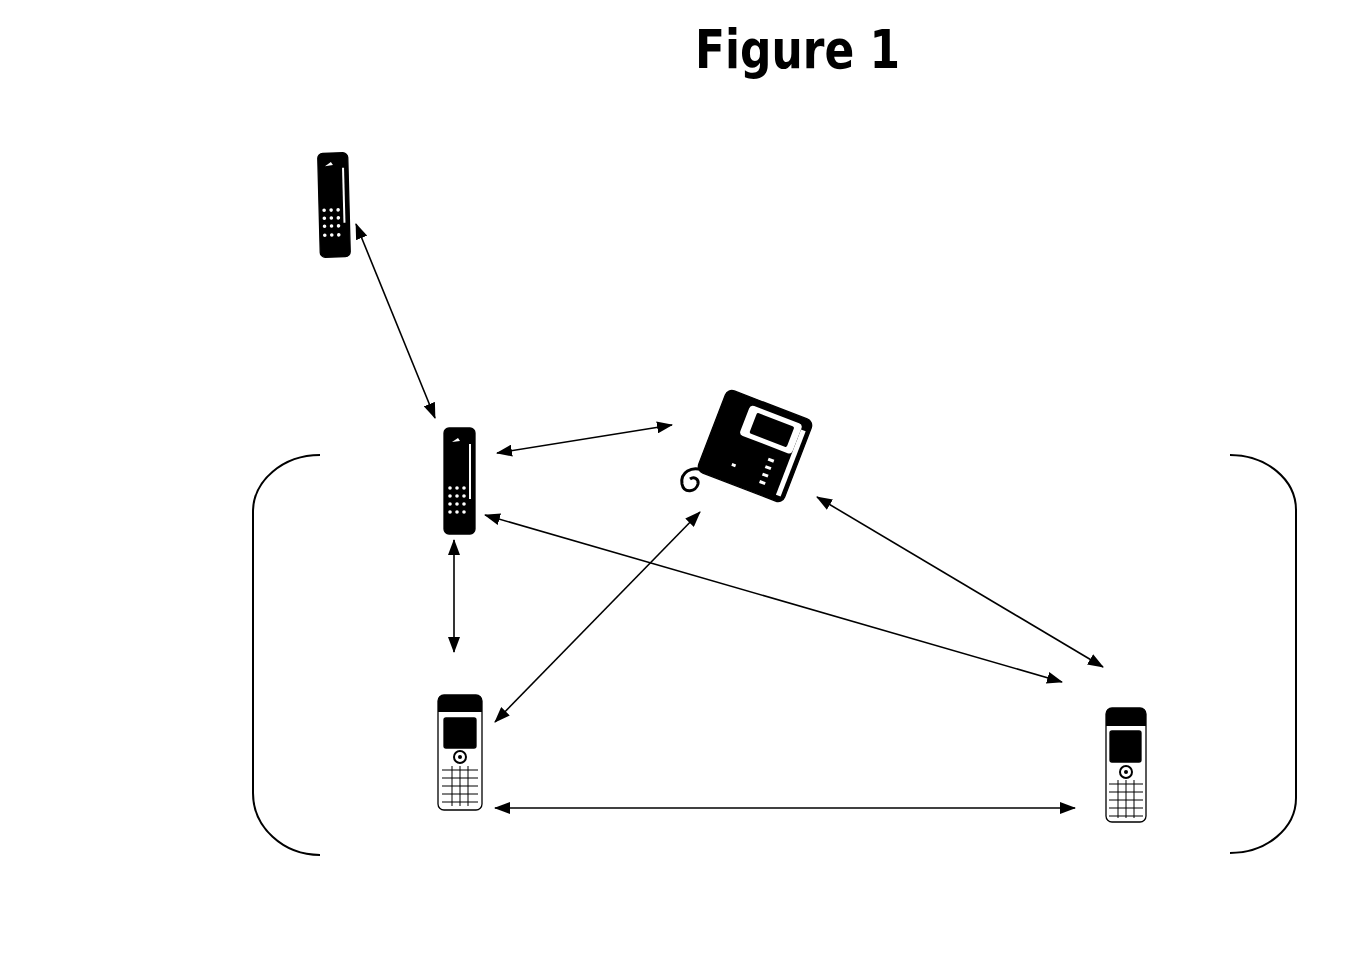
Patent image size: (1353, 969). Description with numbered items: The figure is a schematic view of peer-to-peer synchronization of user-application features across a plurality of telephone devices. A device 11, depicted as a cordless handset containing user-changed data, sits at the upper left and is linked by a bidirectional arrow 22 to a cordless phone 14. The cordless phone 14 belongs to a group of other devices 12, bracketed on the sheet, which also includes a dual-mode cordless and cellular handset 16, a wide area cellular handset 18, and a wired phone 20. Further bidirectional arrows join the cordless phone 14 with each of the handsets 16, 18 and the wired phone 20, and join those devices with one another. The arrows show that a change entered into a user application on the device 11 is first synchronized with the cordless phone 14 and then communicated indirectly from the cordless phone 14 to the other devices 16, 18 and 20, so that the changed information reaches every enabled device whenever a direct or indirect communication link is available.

The device 11 is at (320, 192).
The other devices 12 is at (243, 675).
The cordless phone 14 is at (447, 478).
The dual-mode cordless and cellular handset 16 is at (440, 710).
The wide area cellular handset 18 is at (1160, 737).
The wired phone 20 is at (812, 455).
The bidirectional arrow 22 is at (424, 328).